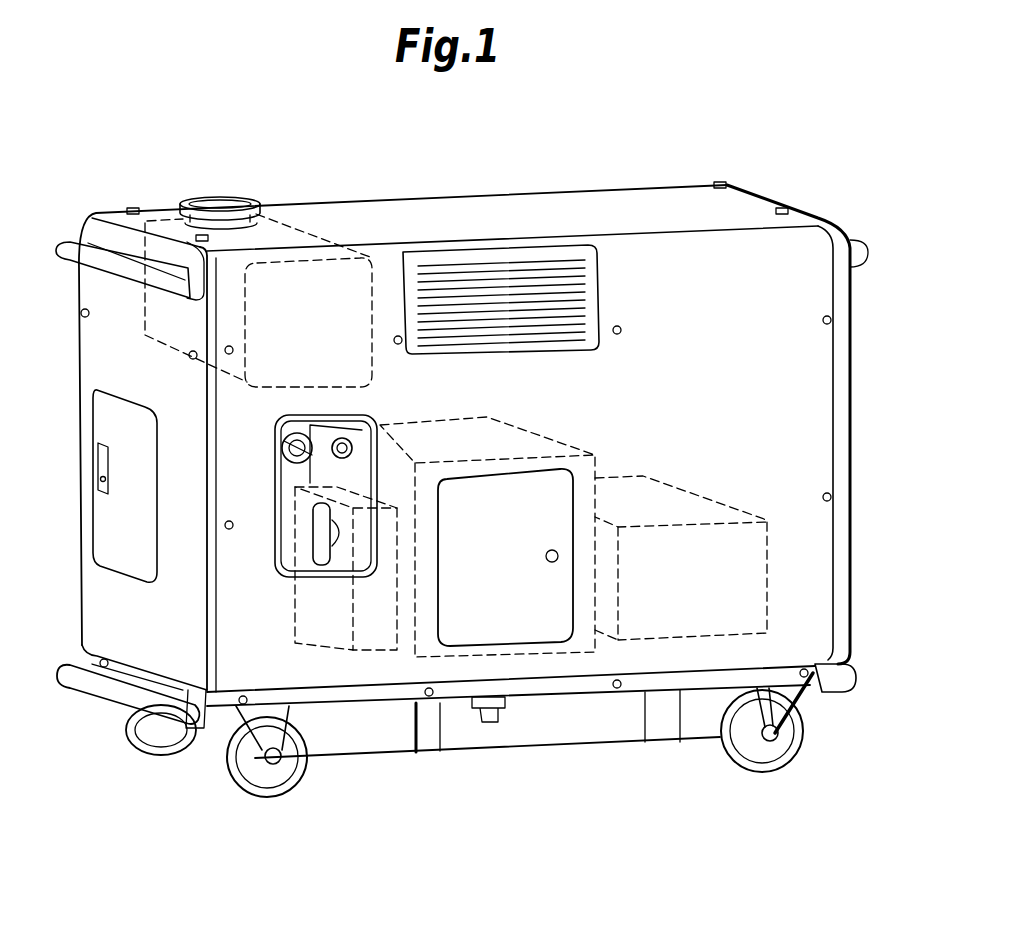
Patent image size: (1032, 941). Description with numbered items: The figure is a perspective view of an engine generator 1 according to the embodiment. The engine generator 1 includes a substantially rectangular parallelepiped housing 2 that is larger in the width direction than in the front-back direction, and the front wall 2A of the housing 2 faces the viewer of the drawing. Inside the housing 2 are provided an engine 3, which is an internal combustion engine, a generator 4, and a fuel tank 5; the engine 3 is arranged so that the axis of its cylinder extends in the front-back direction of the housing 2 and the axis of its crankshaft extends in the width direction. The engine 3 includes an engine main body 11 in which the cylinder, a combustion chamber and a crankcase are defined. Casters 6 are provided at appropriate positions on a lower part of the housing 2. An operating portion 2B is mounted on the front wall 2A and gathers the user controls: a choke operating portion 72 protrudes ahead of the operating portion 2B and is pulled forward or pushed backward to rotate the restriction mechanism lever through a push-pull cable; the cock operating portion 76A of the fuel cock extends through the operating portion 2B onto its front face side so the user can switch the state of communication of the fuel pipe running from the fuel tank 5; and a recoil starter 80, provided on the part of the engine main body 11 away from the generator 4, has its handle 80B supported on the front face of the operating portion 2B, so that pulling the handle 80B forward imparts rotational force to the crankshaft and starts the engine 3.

The engine generator 1 is at (505, 159).
The housing 2 is at (641, 198).
The front wall 2A is at (820, 362).
The operating portion 2B is at (288, 541).
The engine 3 is at (556, 447).
The generator 4 is at (702, 496).
The fuel tank 5 is at (309, 228).
The casters 6 is at (783, 746).
The engine main body 11 is at (560, 653).
The choke operating portion 72 is at (350, 449).
The cock operating portion 76A is at (286, 457).
The recoil starter 80 is at (373, 653).
The handle 80B is at (318, 548).